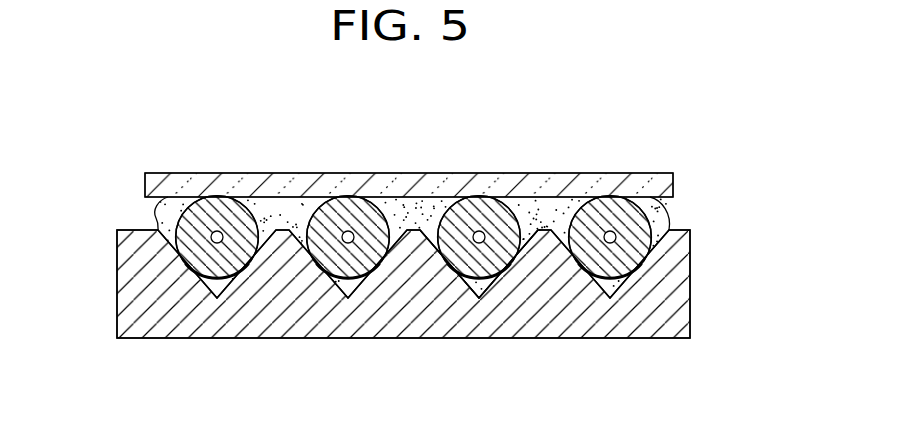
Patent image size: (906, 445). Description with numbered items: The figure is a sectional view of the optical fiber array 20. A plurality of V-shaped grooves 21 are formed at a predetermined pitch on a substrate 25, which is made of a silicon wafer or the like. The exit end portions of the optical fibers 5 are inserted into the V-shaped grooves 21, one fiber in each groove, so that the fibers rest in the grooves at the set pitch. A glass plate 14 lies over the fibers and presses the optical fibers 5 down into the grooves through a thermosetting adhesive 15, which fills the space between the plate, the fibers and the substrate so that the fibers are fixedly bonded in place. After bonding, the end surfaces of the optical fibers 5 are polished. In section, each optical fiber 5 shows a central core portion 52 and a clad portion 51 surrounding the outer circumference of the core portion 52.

The optical fiber array 20 is at (413, 141).
The glass plate 14 is at (586, 174).
The thermosetting adhesive 15 is at (158, 215).
The optical fiber 5 is at (651, 209).
The clad portion 51 is at (666, 239).
The core portion 52 is at (633, 278).
The V-shaped groove 21 is at (482, 285).
The substrate 25 is at (642, 330).